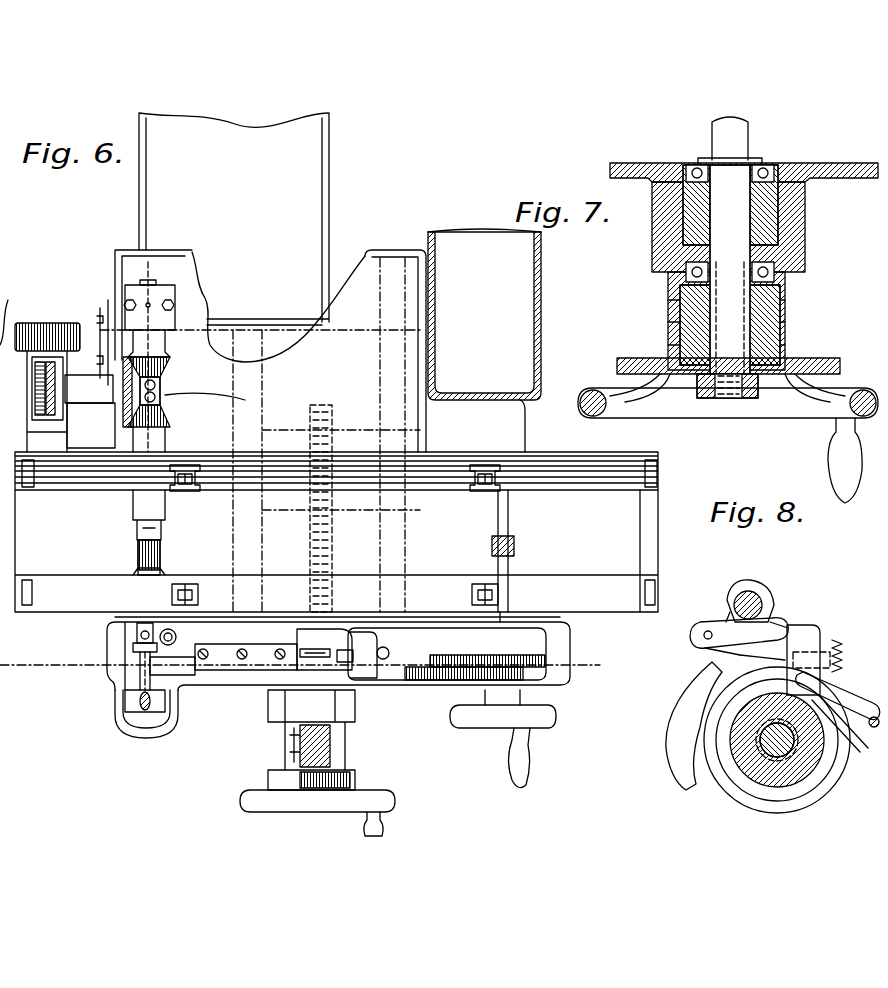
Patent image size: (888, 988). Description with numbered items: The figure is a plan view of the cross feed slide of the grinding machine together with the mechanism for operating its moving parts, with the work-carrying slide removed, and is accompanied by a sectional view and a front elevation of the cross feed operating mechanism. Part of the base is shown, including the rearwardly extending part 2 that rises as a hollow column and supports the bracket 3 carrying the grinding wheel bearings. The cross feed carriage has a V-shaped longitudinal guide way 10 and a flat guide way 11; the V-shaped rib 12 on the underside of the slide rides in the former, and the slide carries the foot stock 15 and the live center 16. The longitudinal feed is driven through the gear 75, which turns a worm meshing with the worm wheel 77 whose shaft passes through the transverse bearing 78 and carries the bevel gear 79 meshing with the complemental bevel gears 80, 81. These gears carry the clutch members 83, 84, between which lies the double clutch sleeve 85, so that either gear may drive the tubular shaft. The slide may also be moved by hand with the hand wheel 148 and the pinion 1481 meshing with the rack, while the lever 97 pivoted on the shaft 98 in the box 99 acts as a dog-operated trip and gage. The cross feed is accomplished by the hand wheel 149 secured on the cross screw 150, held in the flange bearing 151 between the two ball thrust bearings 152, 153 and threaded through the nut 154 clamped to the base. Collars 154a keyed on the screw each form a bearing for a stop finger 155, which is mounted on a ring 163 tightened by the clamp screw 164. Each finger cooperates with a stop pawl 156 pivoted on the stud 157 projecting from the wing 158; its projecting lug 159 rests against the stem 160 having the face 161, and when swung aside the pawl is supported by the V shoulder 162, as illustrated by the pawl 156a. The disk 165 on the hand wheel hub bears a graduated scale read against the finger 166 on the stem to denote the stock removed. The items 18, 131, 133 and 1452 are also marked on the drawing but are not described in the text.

In FIG. 6, the rearwardly extending part 2 is at (527, 287).
In FIG. 6, the bracket 3 is at (548, 250).
In FIG. 6, the longitudinal guide way 10 is at (553, 473).
In FIG. 6, the longitudinal guide way 11 is at (608, 612).
In FIG. 6, the V-shaped rib 12 is at (160, 392).
In FIG. 6, the foot stock 15 is at (566, 680).
In FIG. 6, the live center 16 is at (160, 279).
In FIG. 6, the U-bracket 18 is at (106, 714).
In FIG. 6, the gear 75 is at (50, 323).
In FIG. 6, the worm wheel 77 is at (27, 380).
In FIG. 6, the transverse bearing 78 is at (89, 389).
In FIG. 6, the bevel gear 79 is at (122, 412).
In FIG. 6, the bevel gear 80 is at (170, 365).
In FIG. 6, the bevel gear 81 is at (170, 420).
In FIG. 6, the clutch member 83 is at (162, 380).
In FIG. 6, the clutch member 84 is at (162, 404).
In FIG. 6, the double clutch sleeve 85 is at (250, 400).
In FIG. 6, the lever 97 is at (300, 650).
In FIG. 6, the shaft 98 is at (424, 605).
In FIG. 6, the box 99 is at (274, 640).
In FIG. 7, the flange 131 is at (848, 166).
In FIG. 6, the bolt 133 is at (153, 742).
In FIG. 6, the hand wheel 148 is at (478, 730).
In FIG. 6, the hand wheel 149 is at (300, 818).
In FIG. 7, the hand wheel 149 is at (808, 420).
In FIG. 6, the cross screw 150 is at (333, 543).
In FIG. 7, the cross screw 150 is at (730, 246).
In FIG. 8, the cross screw 150 is at (750, 767).
In FIG. 7, the flange bearing 151 is at (798, 212).
In FIG. 7, the ball thrust bearing 152 is at (690, 166).
In FIG. 7, the ball thrust bearing 153 is at (752, 266).
In FIG. 6, the nut 154 is at (343, 440).
In FIG. 7, the collar 154a is at (668, 318).
In FIG. 8, the collar 154a is at (770, 783).
In FIG. 6, the stop finger 155 is at (350, 756).
In FIG. 8, the stop finger 155 is at (802, 650).
In FIG. 8, the stop pawl 156 is at (792, 648).
In FIG. 8, the stop pawl 156a is at (734, 612).
In FIG. 8, the stud 157 is at (760, 598).
In FIG. 8, the wing 158 is at (725, 655).
In FIG. 8, the projecting lug 159 is at (748, 680).
In FIG. 8, the stem 160 is at (700, 640).
In FIG. 8, the face 161 is at (682, 688).
In FIG. 8, the V shoulder 162 is at (715, 618).
In FIG. 7, the ring 163 is at (786, 292).
In FIG. 8, the ring 163 is at (818, 780).
In FIG. 8, the clamp screw 164 is at (840, 668).
In FIG. 6, the disk 165 is at (356, 780).
In FIG. 7, the disk 165 is at (826, 362).
In FIG. 8, the finger 166 is at (772, 620).
In FIG. 6, the pinion 1481 is at (516, 548).
In FIG. 6, the pin 1452 is at (300, 648).